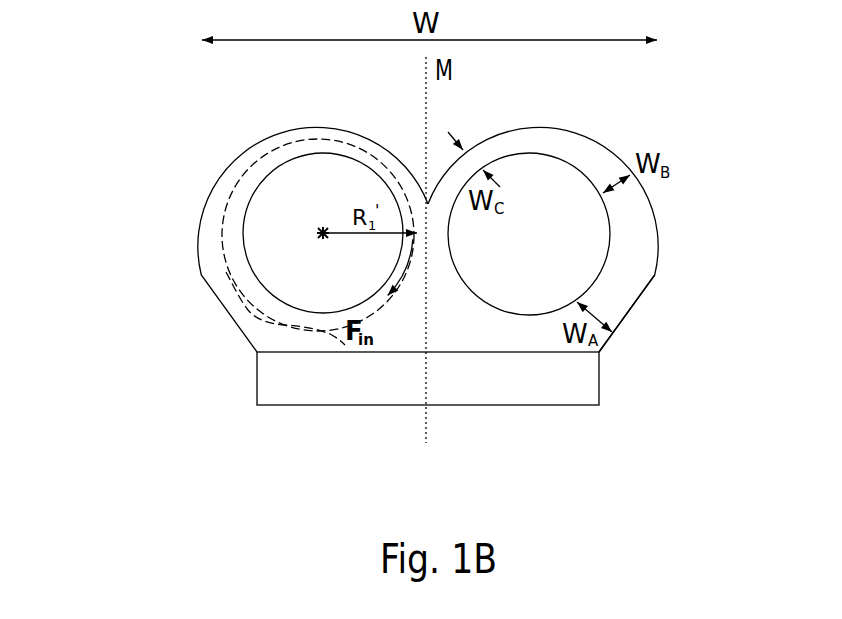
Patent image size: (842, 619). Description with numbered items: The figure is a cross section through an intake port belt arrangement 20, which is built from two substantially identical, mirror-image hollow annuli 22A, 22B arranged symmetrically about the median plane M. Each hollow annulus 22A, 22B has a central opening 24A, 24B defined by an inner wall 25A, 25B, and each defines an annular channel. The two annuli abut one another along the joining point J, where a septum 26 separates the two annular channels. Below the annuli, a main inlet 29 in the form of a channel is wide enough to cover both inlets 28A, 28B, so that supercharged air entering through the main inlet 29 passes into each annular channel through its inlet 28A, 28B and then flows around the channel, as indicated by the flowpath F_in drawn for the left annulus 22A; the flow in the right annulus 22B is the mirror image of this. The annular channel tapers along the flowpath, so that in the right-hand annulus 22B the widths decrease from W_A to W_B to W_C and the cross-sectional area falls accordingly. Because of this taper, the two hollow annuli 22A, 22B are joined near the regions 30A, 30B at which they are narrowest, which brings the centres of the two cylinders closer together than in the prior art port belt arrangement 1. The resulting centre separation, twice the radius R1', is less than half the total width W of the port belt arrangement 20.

The port belt arrangement 20 is at (172, 160).
The hollow annulus 22A is at (273, 153).
The hollow annulus 22B is at (577, 153).
The central opening 24A is at (330, 168).
The central opening 24B is at (523, 168).
The inner wall 25A is at (243, 217).
The inner wall 25B is at (608, 220).
The inlet 28A is at (250, 297).
The inlet 28B is at (603, 297).
The main inlet 29 is at (255, 403).
The region 30A is at (418, 277).
The region 30B is at (433, 238).
The septum 26 is at (435, 303).
The prior art port belt arrangement 1 is at (400, 272).